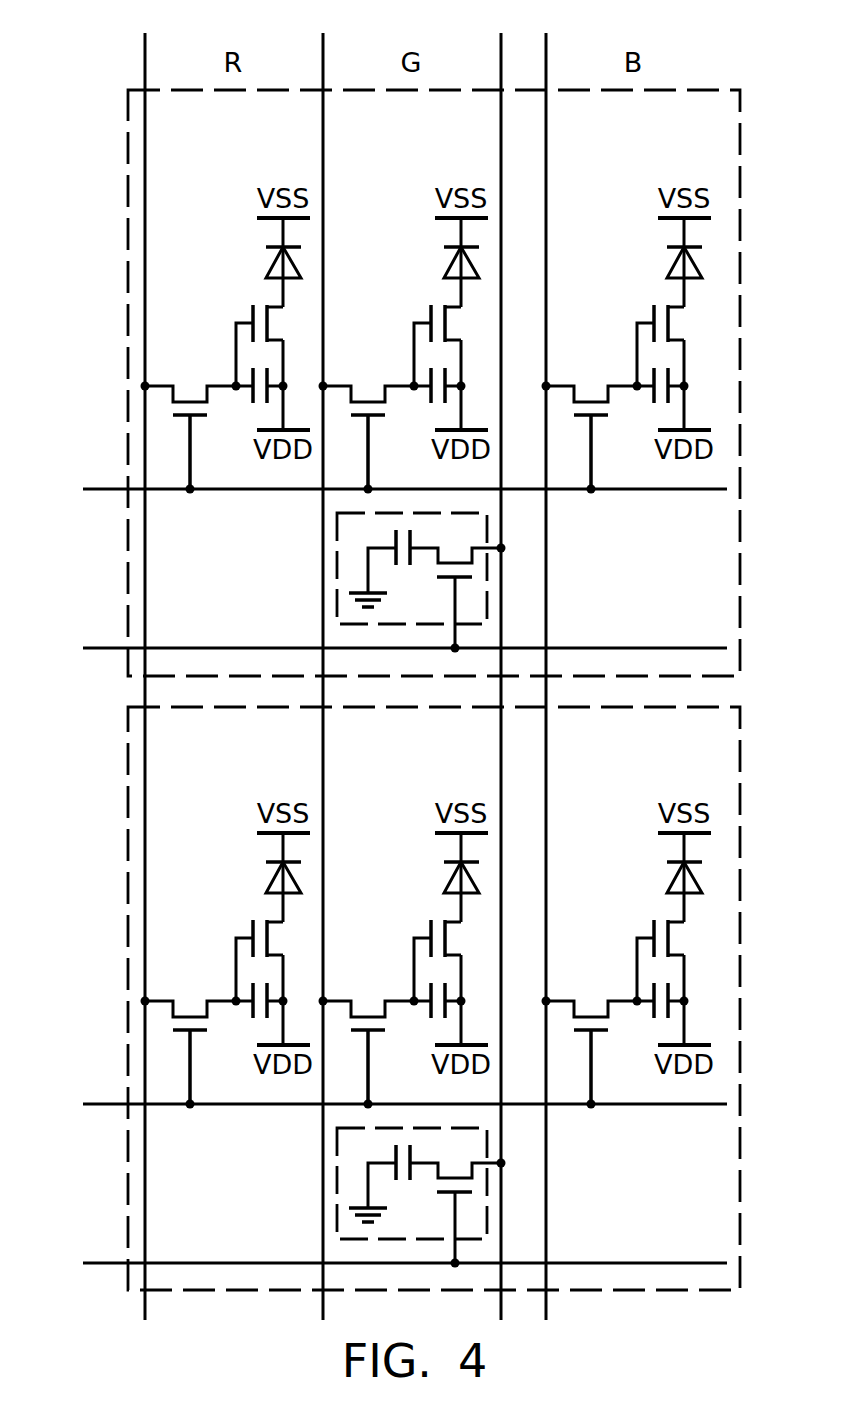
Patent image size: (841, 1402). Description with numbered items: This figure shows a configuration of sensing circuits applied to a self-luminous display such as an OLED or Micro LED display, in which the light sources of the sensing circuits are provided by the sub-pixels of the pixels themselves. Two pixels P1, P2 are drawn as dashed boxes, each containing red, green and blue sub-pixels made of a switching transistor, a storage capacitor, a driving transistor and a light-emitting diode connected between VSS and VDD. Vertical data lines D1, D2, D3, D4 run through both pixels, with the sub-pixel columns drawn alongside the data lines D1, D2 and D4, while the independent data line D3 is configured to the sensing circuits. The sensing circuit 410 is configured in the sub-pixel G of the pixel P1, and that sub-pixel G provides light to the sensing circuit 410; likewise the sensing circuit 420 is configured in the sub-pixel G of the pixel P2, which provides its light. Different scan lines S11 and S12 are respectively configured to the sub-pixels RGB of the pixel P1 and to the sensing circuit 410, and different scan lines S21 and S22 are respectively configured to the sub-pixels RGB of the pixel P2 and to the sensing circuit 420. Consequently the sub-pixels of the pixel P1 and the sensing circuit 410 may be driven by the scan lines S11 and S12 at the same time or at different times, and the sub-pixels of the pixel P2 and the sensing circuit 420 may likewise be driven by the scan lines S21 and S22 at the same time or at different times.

The sensing circuit 410 is at (337, 571).
The sensing circuit 420 is at (337, 1186).
The pixel P1 is at (128, 325).
The pixel P2 is at (128, 940).
The data line D1 is at (144, 662).
The data line D2 is at (322, 662).
The data line D3 is at (497, 662).
The data line D4 is at (552, 662).
The scan line S11 is at (380, 490).
The scan line S12 is at (380, 649).
The scan line S21 is at (380, 1105).
The scan line S22 is at (380, 1264).